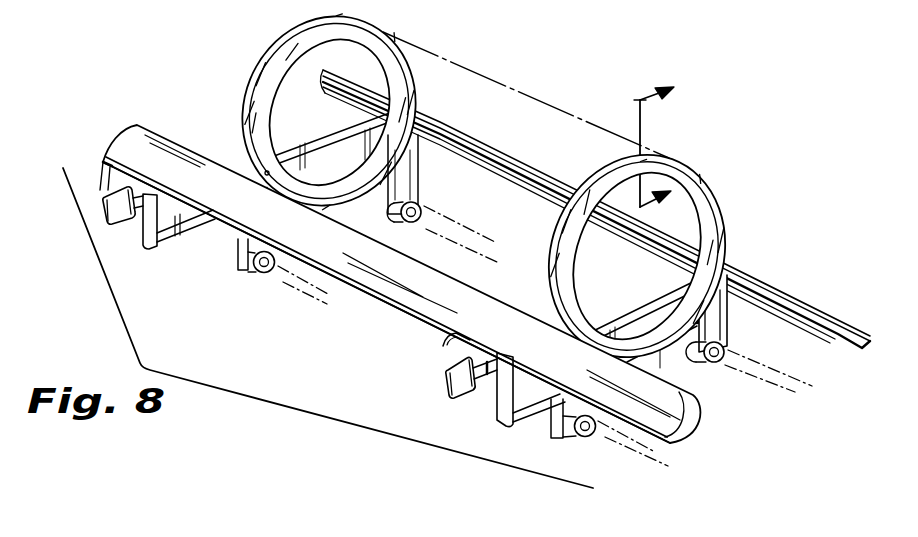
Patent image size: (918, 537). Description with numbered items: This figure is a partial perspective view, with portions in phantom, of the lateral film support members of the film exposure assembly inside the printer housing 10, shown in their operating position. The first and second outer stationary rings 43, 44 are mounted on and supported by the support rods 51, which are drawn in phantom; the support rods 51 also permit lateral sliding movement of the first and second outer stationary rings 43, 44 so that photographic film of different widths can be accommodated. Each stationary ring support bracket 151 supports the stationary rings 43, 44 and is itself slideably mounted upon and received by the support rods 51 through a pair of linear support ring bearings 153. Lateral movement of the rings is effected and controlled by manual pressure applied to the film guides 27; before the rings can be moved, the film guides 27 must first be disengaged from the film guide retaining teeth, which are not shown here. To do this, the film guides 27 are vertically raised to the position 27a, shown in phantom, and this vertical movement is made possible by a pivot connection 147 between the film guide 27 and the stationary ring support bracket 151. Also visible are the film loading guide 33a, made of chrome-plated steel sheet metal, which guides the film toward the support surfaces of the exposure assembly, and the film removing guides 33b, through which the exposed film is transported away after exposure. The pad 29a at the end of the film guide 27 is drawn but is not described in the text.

The housing 10 is at (556, 119).
The film guides 27 is at (151, 249).
The raised position of film guides 27a is at (441, 349).
The pad 29a is at (100, 174).
The film loading guide 33a is at (682, 400).
The film removing guides 33b is at (793, 291).
The first outer stationary ring 43 is at (307, 40).
The second outer stationary ring 44 is at (712, 203).
The support rods 51 is at (564, 348).
The pivot connection 147 is at (700, 317).
The stationary ring support bracket 151 is at (643, 316).
The linear support ring bearings 153 is at (258, 274).